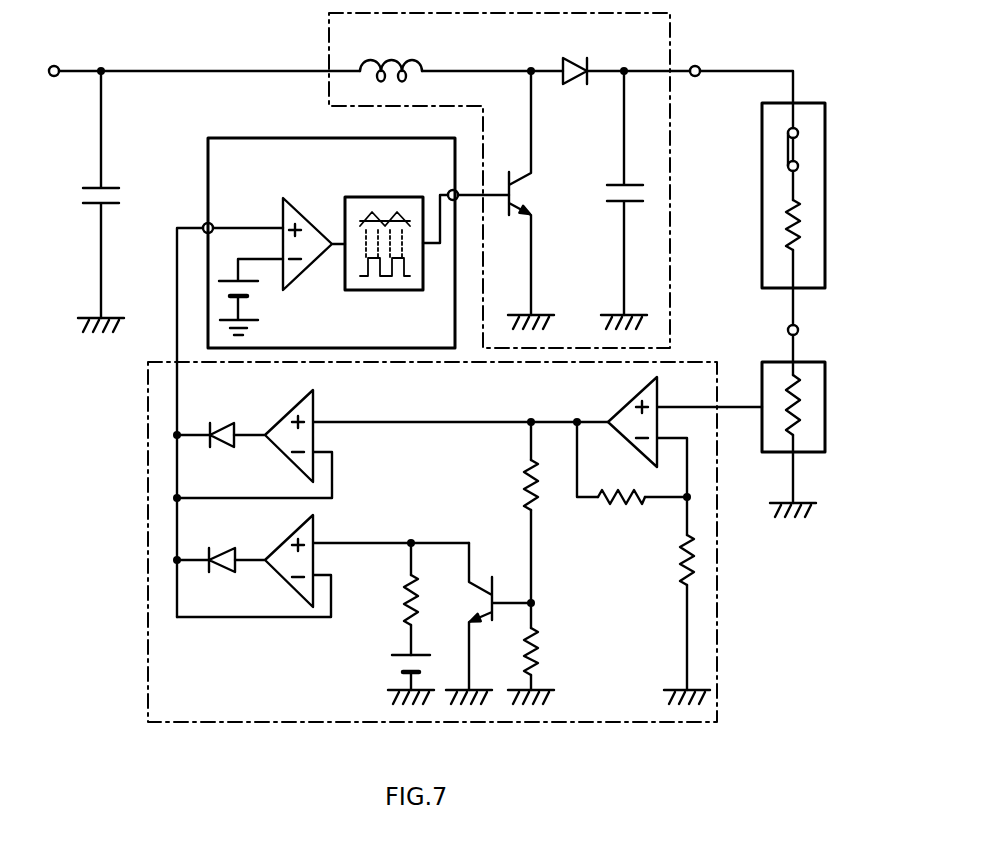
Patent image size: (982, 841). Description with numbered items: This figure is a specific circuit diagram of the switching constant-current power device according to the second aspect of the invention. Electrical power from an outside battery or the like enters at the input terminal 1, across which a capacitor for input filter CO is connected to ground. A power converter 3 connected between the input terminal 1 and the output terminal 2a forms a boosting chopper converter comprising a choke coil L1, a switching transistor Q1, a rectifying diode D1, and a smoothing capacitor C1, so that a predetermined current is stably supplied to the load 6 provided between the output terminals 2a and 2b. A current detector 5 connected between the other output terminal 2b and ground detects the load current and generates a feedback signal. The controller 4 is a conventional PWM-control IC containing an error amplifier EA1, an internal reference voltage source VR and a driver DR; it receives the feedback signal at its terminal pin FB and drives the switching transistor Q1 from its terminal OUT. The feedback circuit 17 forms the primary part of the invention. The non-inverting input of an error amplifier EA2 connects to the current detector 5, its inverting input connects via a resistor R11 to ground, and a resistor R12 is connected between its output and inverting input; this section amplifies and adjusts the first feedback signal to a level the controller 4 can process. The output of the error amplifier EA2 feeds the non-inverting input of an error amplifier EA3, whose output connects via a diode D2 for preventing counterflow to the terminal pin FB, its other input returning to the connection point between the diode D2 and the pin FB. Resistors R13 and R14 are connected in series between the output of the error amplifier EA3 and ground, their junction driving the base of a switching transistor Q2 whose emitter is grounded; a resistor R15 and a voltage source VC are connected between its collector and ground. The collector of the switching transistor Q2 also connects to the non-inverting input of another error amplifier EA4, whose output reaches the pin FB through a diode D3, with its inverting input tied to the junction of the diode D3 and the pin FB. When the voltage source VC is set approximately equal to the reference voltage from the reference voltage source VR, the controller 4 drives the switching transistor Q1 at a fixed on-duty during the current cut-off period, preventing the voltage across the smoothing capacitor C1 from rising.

The input terminal 1 is at (53, 64).
The output terminal 2a is at (697, 64).
The output terminal 2b is at (799, 330).
The power converter 3 is at (327, 41).
The controller 4 is at (207, 159).
The current detector 5 is at (815, 453).
The load 6 is at (816, 103).
The feedback circuit 17 is at (718, 672).
The capacitor for input filter CO is at (82, 201).
The choke coil L1 is at (391, 56).
The rectifying diode D1 is at (579, 57).
The switching transistor Q1 is at (538, 200).
The smoothing capacitor C1 is at (616, 200).
The terminal pin for feedback signal input FB is at (212, 223).
The output terminal of controller OUT is at (448, 191).
The error amplifier EA1 is at (311, 210).
The reference voltage source VR is at (258, 292).
The driver DR is at (385, 293).
The error amplifier EA2 is at (622, 410).
The error amplifier EA3 is at (280, 420).
The error amplifier EA4 is at (278, 545).
The diode for preventing counterflow D2 is at (208, 454).
The diode D3 is at (207, 580).
The resistor R11 is at (671, 619).
The resistor R12 is at (634, 480).
The resistor R13 is at (508, 514).
The resistor R14 is at (549, 653).
The resistor R15 is at (386, 599).
The switching transistor Q2 is at (482, 623).
The voltage source VC is at (392, 678).